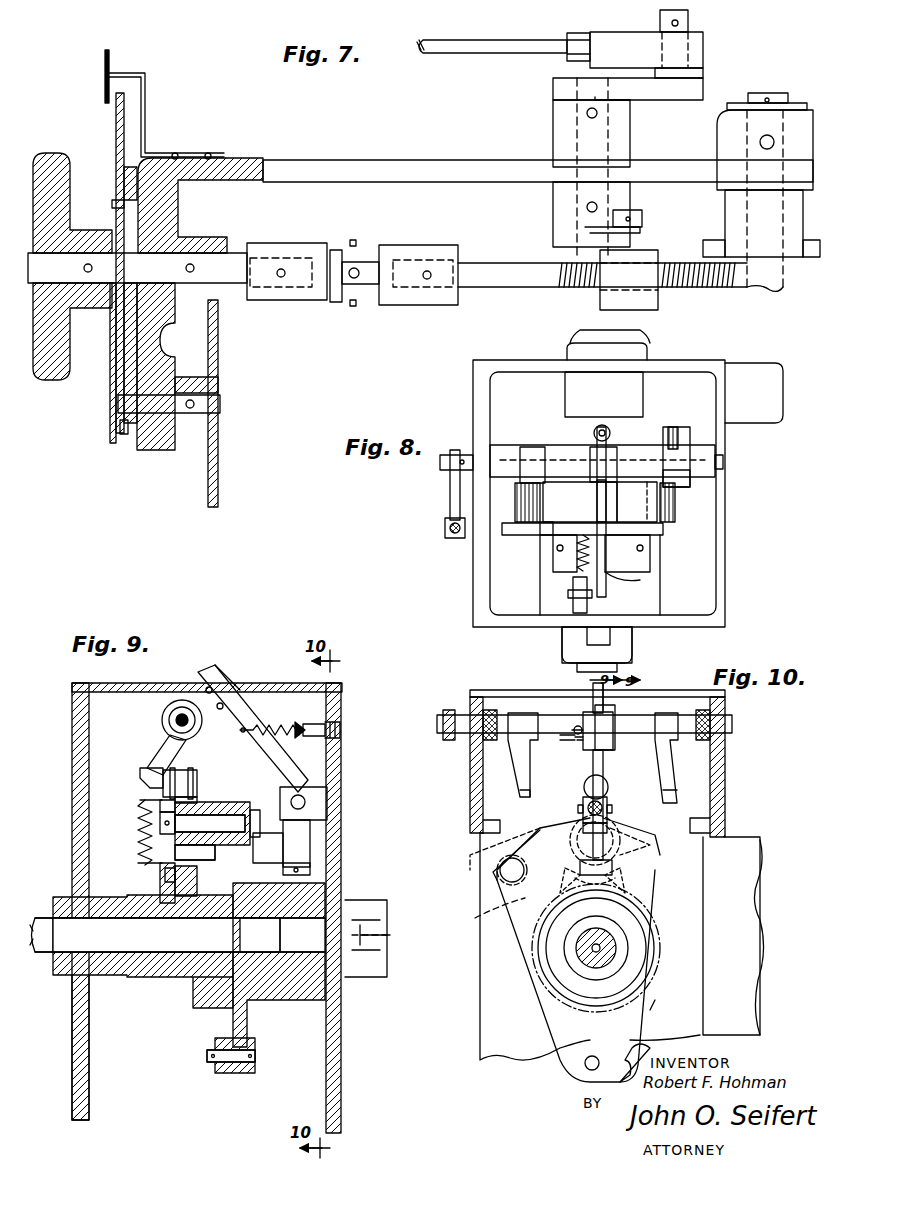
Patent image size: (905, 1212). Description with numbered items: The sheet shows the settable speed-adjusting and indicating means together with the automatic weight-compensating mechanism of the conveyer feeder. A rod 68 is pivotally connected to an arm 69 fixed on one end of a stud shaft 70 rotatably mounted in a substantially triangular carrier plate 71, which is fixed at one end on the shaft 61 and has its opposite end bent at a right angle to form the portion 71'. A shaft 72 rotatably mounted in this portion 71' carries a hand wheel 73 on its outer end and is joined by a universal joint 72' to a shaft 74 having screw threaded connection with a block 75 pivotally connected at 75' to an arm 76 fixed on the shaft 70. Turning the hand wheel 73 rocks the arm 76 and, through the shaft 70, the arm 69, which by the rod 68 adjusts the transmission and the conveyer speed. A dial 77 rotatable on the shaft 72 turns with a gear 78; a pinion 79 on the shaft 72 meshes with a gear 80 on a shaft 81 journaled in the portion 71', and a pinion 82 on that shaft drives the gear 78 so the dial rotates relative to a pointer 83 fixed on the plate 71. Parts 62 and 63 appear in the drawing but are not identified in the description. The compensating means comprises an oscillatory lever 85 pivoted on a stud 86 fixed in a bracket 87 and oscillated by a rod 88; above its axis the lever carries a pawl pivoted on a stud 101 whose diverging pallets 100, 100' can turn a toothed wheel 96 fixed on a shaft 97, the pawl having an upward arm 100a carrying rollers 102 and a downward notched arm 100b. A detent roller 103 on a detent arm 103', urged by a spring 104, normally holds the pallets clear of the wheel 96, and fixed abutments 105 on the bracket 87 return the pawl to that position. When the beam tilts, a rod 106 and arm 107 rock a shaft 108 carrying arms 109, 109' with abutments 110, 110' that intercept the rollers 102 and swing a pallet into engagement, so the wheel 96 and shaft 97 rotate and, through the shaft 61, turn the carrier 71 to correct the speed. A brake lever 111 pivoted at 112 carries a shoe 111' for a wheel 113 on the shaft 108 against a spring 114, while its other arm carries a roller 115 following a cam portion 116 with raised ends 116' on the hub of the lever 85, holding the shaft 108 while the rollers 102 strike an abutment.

In FIG. 7, the shaft 61 is at (773, 93).
In FIG. 7, the lower bracket block 62 is at (725, 232).
In FIG. 7, the pin 63 is at (818, 262).
In FIG. 7, the rod 68 is at (478, 55).
In FIG. 7, the arm 69 is at (698, 90).
In FIG. 7, the stud shaft 70 is at (553, 112).
In FIG. 7, the triangular plate carrier 71 is at (538, 155).
In FIG. 7, the right angle portion of plate 71' is at (161, 401).
In FIG. 7, the shaft 72 is at (177, 256).
In FIG. 7, the universal joint 72' is at (394, 259).
In FIG. 7, the hand manipulating wheel 73 is at (52, 380).
In FIG. 7, the shaft 74 is at (495, 288).
In FIG. 7, the block 75 is at (650, 291).
In FIG. 7, the pivotal connection 75' is at (646, 211).
In FIG. 7, the arm 76 is at (650, 237).
In FIG. 7, the dial 77 is at (116, 150).
In FIG. 7, the gear 78 is at (113, 345).
In FIG. 7, the pinion 79 is at (193, 237).
In FIG. 7, the gear 80 is at (220, 375).
In FIG. 7, the shaft 81 is at (222, 404).
In FIG. 7, the pinion 82 is at (124, 436).
In FIG. 7, the pointer 83 is at (105, 70).
In FIG. 8, the oscillatory lever 85 is at (640, 627).
In FIG. 9, the oscillatory lever 85 is at (255, 995).
In FIG. 10, the oscillatory lever 85 is at (555, 1020).
In FIG. 9, the stud 86 is at (308, 968).
In FIG. 10, the stud 86 is at (616, 950).
In FIG. 8, the bracket 87 is at (725, 565).
In FIG. 9, the bracket 87 is at (341, 1047).
In FIG. 10, the bracket 87 is at (725, 800).
In FIG. 9, the rod 88 is at (228, 1073).
In FIG. 10, the rod 88 is at (630, 1060).
In FIG. 8, the toothed wheel 96 is at (718, 530).
In FIG. 9, the toothed wheel 96 is at (172, 970).
In FIG. 10, the toothed wheel 96 is at (652, 915).
In FIG. 7, the shaft 97 is at (598, 322).
In FIG. 9, the shaft 97 is at (150, 925).
In FIG. 8, the pallet 100 is at (580, 502).
In FIG. 10, the pallet 100 is at (578, 842).
In FIG. 8, the pallet 100' is at (637, 502).
In FIG. 9, the pallet 100' is at (198, 856).
In FIG. 10, the pallet 100' is at (655, 841).
In FIG. 9, the pawl arm 100a is at (178, 780).
In FIG. 9, the pawl arm 100b is at (131, 838).
In FIG. 10, the pawl arm 100b is at (632, 872).
In FIG. 9, the stud 101 is at (200, 802).
In FIG. 10, the stud 101 is at (583, 815).
In FIG. 9, the rollers 102 is at (193, 780).
In FIG. 10, the rollers 102 is at (606, 780).
In FIG. 9, the detent roller 103 is at (180, 886).
In FIG. 8, the detent arm 103' is at (555, 526).
In FIG. 9, the detent arm 103' is at (143, 883).
In FIG. 10, the detent arm 103' is at (484, 910).
In FIG. 8, the spring 104 is at (603, 427).
In FIG. 9, the spring 104 is at (138, 808).
In FIG. 8, the fixed abutments 105 is at (505, 445).
In FIG. 9, the fixed abutments 105 is at (210, 823).
In FIG. 10, the fixed abutments 105 is at (483, 805).
In FIG. 8, the rod 106 is at (445, 535).
In FIG. 8, the arm 107 is at (450, 495).
In FIG. 10, the arm 107 is at (450, 740).
In FIG. 8, the rock shaft 108 is at (470, 455).
In FIG. 9, the rock shaft 108 is at (182, 715).
In FIG. 10, the rock shaft 108 is at (570, 730).
In FIG. 8, the arm 109 is at (689, 492).
In FIG. 9, the arm 109 is at (149, 747).
In FIG. 10, the arm 109 is at (678, 750).
In FIG. 8, the arm 109' is at (545, 451).
In FIG. 10, the arm 109' is at (539, 755).
In FIG. 8, the abutment 110 is at (694, 416).
In FIG. 9, the abutment 110 is at (130, 777).
In FIG. 10, the abutment 110 is at (652, 790).
In FIG. 8, the abutment 110' is at (524, 554).
In FIG. 10, the abutment 110' is at (545, 785).
In FIG. 8, the brake lever 111 is at (619, 512).
In FIG. 9, the brake lever 111 is at (253, 728).
In FIG. 10, the brake lever 111 is at (584, 805).
In FIG. 8, the shoe 111' is at (584, 501).
In FIG. 9, the shoe 111' is at (243, 676).
In FIG. 10, the shoe 111' is at (653, 690).
In FIG. 8, the pivot support 112 is at (592, 590).
In FIG. 9, the pivot support 112 is at (327, 805).
In FIG. 10, the pivot support 112 is at (610, 810).
In FIG. 8, the wheel 113 is at (635, 440).
In FIG. 9, the wheel 113 is at (170, 712).
In FIG. 10, the wheel 113 is at (613, 708).
In FIG. 8, the spring 114 is at (577, 545).
In FIG. 9, the spring 114 is at (300, 728).
In FIG. 10, the spring 114 is at (593, 700).
In FIG. 9, the roller 115 is at (310, 848).
In FIG. 10, the roller 115 is at (618, 878).
In FIG. 8, the projecting cam portion 116 is at (658, 553).
In FIG. 9, the projecting cam portion 116 is at (269, 847).
In FIG. 10, the projecting cam portion 116 is at (505, 848).
In FIG. 8, the raised cam portions 116' is at (603, 571).
In FIG. 9, the raised cam portions 116' is at (337, 877).
In FIG. 10, the raised cam portions 116' is at (595, 895).